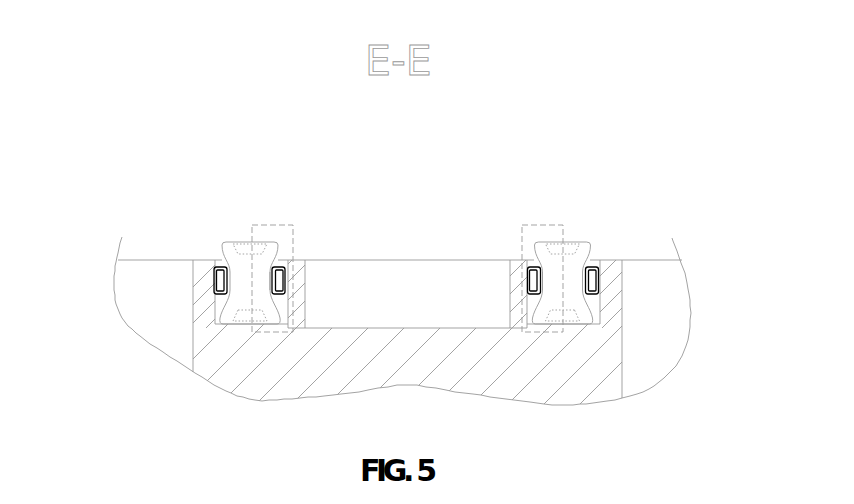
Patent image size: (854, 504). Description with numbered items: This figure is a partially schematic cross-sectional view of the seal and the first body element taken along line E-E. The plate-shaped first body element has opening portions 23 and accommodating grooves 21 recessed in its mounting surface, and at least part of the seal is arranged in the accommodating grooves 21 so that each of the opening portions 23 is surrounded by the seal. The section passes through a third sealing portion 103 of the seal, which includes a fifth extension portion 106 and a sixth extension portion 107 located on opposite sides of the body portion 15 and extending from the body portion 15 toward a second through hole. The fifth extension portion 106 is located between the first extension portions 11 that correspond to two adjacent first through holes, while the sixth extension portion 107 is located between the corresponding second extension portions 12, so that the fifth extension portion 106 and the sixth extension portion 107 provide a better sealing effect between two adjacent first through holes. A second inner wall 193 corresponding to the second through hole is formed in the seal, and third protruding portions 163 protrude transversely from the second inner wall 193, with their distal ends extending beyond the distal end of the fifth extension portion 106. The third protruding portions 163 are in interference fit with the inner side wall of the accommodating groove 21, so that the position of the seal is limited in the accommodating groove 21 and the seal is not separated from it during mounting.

The first extension portion 11 is at (398, 230).
The second extension portion 12 is at (410, 340).
The body portion 15 is at (407, 228).
The accommodating groove 21 is at (380, 329).
The opening portion 23 is at (396, 278).
The third sealing portion 103 is at (407, 277).
The fifth extension portion 106 is at (406, 195).
The sixth extension portion 107 is at (406, 375).
The third protruding portion 163 is at (406, 281).
The second inner wall 193 is at (407, 300).